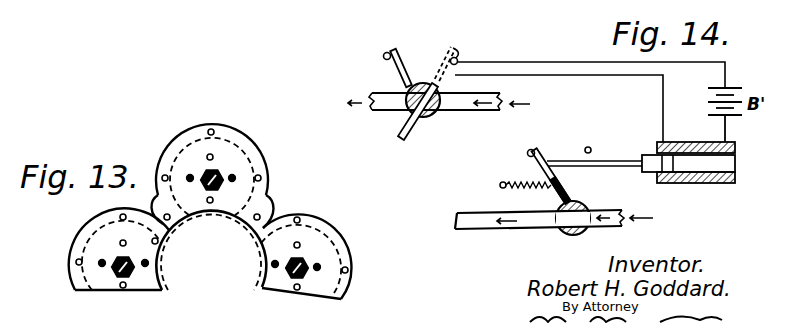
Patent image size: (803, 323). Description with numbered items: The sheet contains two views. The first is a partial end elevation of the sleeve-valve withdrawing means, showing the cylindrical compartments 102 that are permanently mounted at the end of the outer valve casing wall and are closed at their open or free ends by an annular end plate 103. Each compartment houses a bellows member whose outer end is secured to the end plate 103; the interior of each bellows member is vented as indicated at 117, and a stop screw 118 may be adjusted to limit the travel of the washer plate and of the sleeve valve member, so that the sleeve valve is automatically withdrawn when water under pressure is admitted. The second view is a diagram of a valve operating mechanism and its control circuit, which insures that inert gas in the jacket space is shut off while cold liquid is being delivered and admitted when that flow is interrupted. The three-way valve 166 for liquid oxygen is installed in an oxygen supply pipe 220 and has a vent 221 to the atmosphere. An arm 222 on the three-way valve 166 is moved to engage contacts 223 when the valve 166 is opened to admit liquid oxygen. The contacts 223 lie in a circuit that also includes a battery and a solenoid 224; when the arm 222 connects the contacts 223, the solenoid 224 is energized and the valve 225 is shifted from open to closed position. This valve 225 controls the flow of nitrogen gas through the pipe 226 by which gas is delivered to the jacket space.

In FIG. 13, the cylindrical compartments 102 is at (243, 132).
In FIG. 13, the annular end plate 103 is at (255, 162).
In FIG. 13, the vent 117 is at (207, 155).
In FIG. 13, the stop screw 118 is at (215, 192).
In FIG. 14, the three-way valve 166 is at (410, 90).
In FIG. 14, the oxygen supply pipe 220 is at (370, 96).
In FIG. 14, the vent 221 is at (401, 138).
In FIG. 14, the arm 222 is at (393, 49).
In FIG. 14, the contacts 223 is at (458, 56).
In FIG. 14, the solenoid 224 is at (707, 183).
In FIG. 14, the valve 225 is at (576, 238).
In FIG. 14, the pipe 226 is at (607, 210).